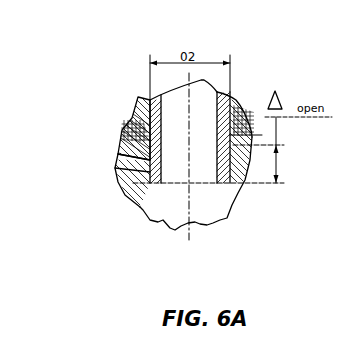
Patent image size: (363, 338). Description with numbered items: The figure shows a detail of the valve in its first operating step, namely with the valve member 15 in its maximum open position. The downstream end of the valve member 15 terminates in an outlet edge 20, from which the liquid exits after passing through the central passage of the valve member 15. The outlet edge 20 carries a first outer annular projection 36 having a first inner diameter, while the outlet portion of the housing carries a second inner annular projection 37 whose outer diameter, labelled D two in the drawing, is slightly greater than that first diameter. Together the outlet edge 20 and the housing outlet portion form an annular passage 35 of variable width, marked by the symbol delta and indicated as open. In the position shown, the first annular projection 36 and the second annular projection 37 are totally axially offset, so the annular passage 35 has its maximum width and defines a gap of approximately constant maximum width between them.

The valve member 15 is at (217, 100).
The outlet edge 20 is at (231, 204).
The annular passage 35 is at (238, 158).
The first outer annular projection 36 is at (127, 179).
The second inner annular projection 37 is at (118, 154).